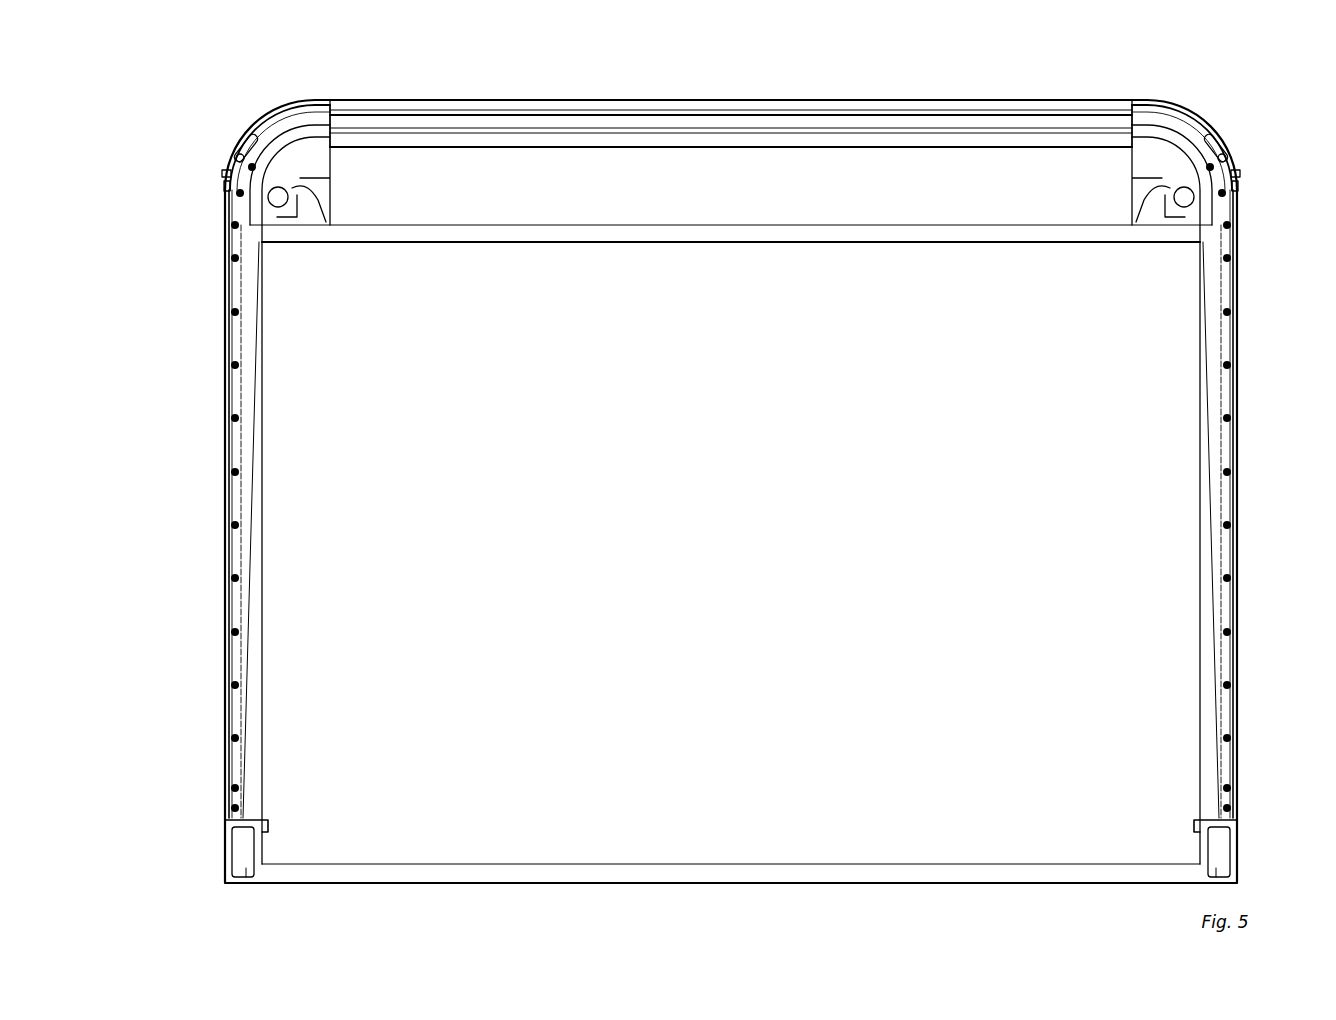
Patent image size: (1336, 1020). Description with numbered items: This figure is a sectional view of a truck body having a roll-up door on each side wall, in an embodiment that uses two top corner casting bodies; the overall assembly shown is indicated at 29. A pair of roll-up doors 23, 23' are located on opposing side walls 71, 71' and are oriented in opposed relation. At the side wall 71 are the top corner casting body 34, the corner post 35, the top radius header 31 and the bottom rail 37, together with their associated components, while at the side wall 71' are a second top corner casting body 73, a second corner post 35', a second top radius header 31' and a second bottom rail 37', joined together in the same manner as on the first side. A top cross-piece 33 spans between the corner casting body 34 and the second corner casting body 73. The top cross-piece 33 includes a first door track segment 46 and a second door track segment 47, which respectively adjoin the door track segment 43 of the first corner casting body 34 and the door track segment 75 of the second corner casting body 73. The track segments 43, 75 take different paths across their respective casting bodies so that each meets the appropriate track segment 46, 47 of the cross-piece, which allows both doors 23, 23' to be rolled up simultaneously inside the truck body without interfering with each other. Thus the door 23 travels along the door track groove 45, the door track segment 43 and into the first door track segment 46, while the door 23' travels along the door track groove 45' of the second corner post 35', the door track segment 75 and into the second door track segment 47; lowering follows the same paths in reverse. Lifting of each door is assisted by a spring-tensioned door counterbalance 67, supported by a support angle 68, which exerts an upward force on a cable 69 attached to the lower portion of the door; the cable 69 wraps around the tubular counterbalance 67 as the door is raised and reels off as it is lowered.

The cover frame assembly 29 is at (1102, 78).
The top radius header 31 is at (1221, 143).
The second top radius header 31' is at (276, 128).
The top cross-piece 33 is at (762, 100).
The roll-up door 23 is at (1274, 504).
The roll-up door 23' is at (195, 504).
The corner post 35 is at (1258, 521).
The second corner post 35' is at (201, 521).
The bottom rail 37 is at (1163, 844).
The second bottom rail 37' is at (297, 846).
The door track segment 43 is at (1150, 140).
The door track groove 45 is at (1169, 530).
The door track groove 45' is at (300, 530).
The first door track segment 46 is at (1055, 135).
The second door track segment 47 is at (376, 125).
The door counterbalance 67 is at (300, 217).
The support angle 68 is at (295, 215).
The cable 69 is at (265, 235).
The side wall 71 is at (1265, 545).
The side wall 71' is at (203, 553).
The second top corner casting body 73 is at (300, 172).
The door track segment 75 is at (312, 140).
The top corner casting body 34 is at (1162, 165).